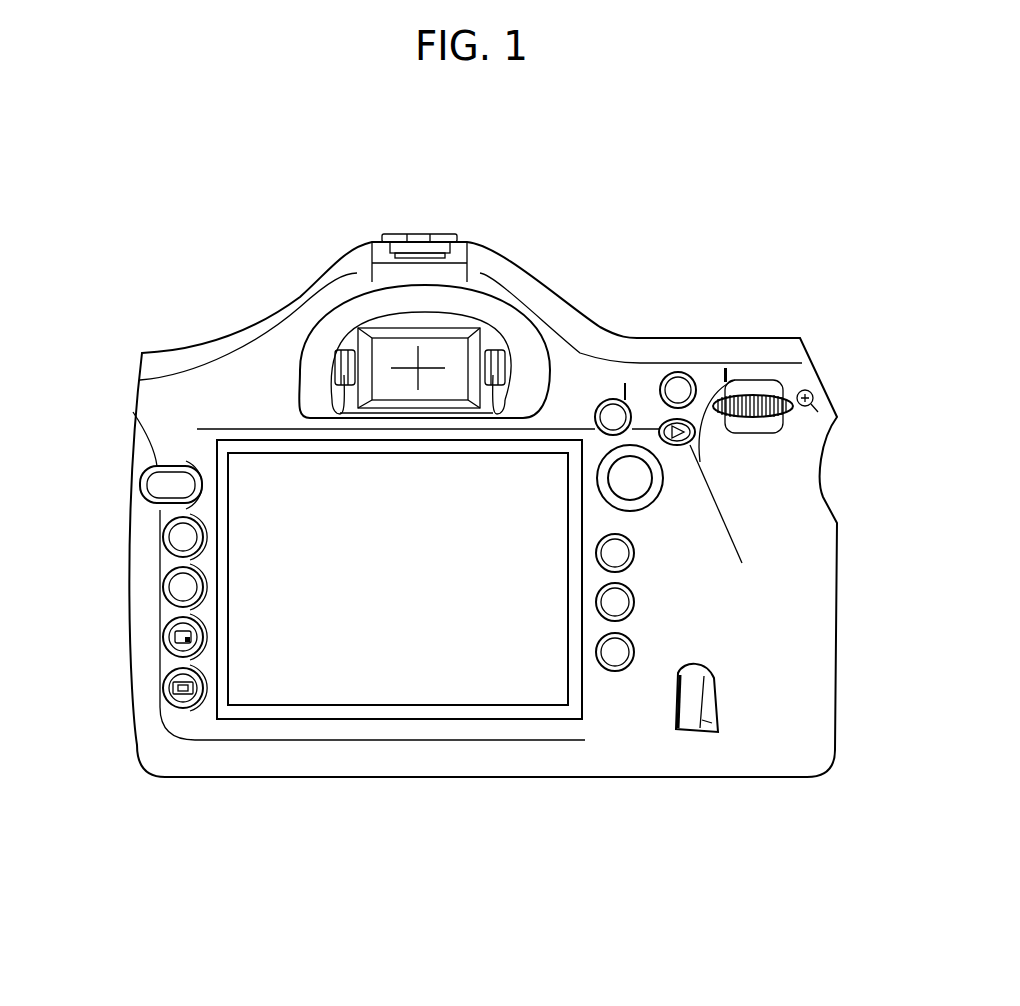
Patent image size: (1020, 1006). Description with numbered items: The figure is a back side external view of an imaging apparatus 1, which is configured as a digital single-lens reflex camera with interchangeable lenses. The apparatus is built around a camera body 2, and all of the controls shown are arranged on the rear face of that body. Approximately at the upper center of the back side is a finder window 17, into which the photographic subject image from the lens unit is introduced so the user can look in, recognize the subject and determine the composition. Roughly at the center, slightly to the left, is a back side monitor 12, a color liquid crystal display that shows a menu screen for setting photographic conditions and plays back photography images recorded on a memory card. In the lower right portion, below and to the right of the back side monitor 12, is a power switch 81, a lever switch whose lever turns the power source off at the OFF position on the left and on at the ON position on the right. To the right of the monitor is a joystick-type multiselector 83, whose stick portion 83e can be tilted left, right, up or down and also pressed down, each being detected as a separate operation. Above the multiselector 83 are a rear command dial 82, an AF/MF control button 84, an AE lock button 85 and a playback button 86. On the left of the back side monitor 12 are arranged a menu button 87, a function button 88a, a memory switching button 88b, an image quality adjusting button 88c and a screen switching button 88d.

The imaging apparatus 1 is at (148, 263).
The camera body 2 is at (285, 302).
The back side monitor 12 is at (328, 688).
The finder window 17 is at (387, 352).
The power switch 81 is at (692, 728).
The rear command dial 82 is at (757, 393).
The multiselector 83 is at (598, 488).
The stick portion 83e is at (623, 485).
The AF/MF control button 84 is at (612, 398).
The AE lock button 85 is at (680, 372).
The playback button 86 is at (693, 440).
The menu button 87 is at (140, 486).
The function button 88a is at (163, 537).
The memory switching button 88b is at (163, 587).
The image quality adjusting button 88c is at (163, 637).
The screen switching button 88d is at (163, 688).